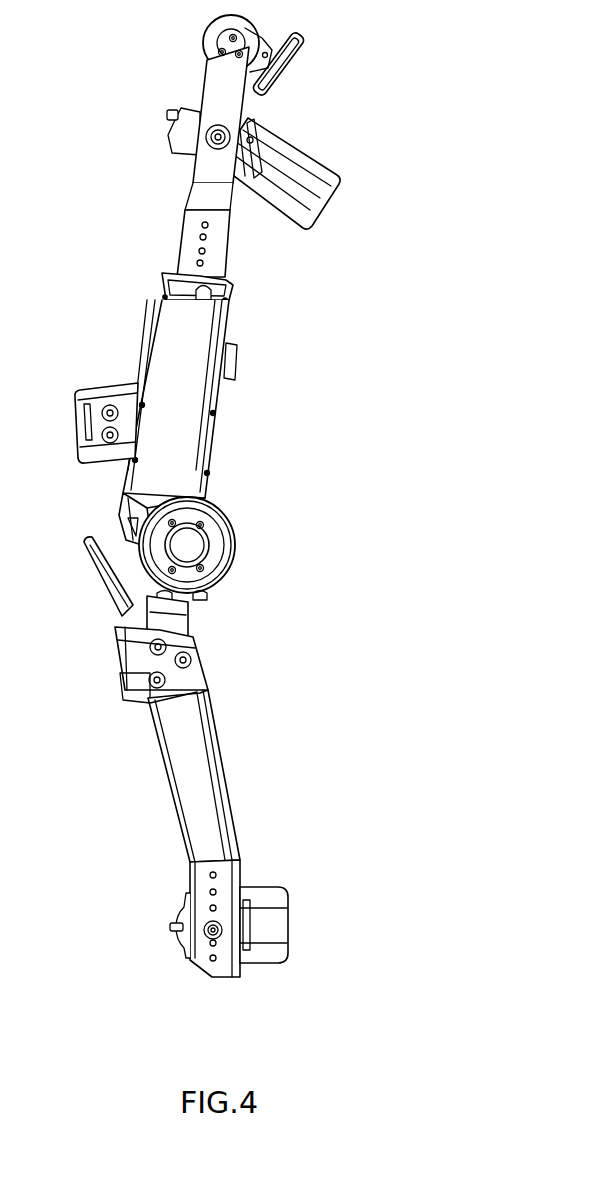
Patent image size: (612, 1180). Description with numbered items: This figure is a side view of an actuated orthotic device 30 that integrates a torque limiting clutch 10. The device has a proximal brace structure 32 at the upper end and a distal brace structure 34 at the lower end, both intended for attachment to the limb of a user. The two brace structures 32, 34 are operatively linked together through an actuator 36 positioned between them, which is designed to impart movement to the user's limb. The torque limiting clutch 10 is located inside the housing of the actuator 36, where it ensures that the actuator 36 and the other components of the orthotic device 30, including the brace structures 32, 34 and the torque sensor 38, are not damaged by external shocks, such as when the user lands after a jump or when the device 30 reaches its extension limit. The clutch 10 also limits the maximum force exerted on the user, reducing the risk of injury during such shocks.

The actuated orthotic device 30 is at (257, 496).
The proximal brace structure 32 is at (255, 350).
The distal brace structure 34 is at (245, 782).
The actuator 36 is at (240, 538).
The torque sensor 38 is at (125, 521).
The torque limiting clutch 10 is at (205, 608).